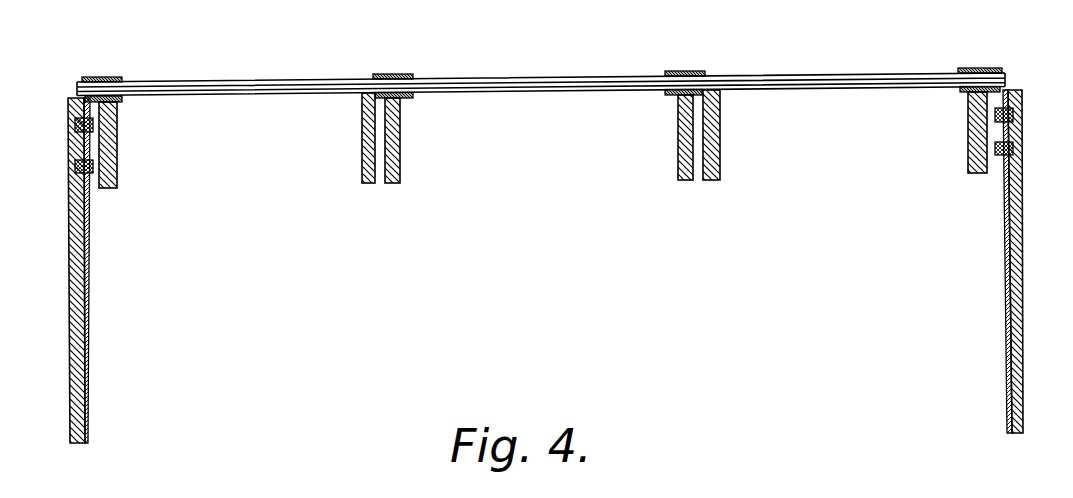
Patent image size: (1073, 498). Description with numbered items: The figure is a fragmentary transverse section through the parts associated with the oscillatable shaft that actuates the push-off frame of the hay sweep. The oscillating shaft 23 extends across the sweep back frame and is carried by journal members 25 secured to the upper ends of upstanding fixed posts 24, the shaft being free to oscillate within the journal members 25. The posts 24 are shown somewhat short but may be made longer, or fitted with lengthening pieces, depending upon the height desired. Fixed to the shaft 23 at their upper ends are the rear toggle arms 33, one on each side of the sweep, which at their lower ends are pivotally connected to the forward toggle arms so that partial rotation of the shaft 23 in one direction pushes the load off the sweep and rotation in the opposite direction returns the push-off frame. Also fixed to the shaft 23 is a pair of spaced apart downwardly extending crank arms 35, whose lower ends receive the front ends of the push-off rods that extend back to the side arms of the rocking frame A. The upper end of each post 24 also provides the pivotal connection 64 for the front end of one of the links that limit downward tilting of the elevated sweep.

The oscillating shaft 23 is at (548, 79).
The upstanding post 24 is at (117, 132).
The journal member 25 is at (97, 77).
The rear toggle arm 33 is at (70, 238).
The crank arm 35 is at (362, 119).
The pivotal connection 64 is at (387, 108).
The rocking frame A is at (362, 168).